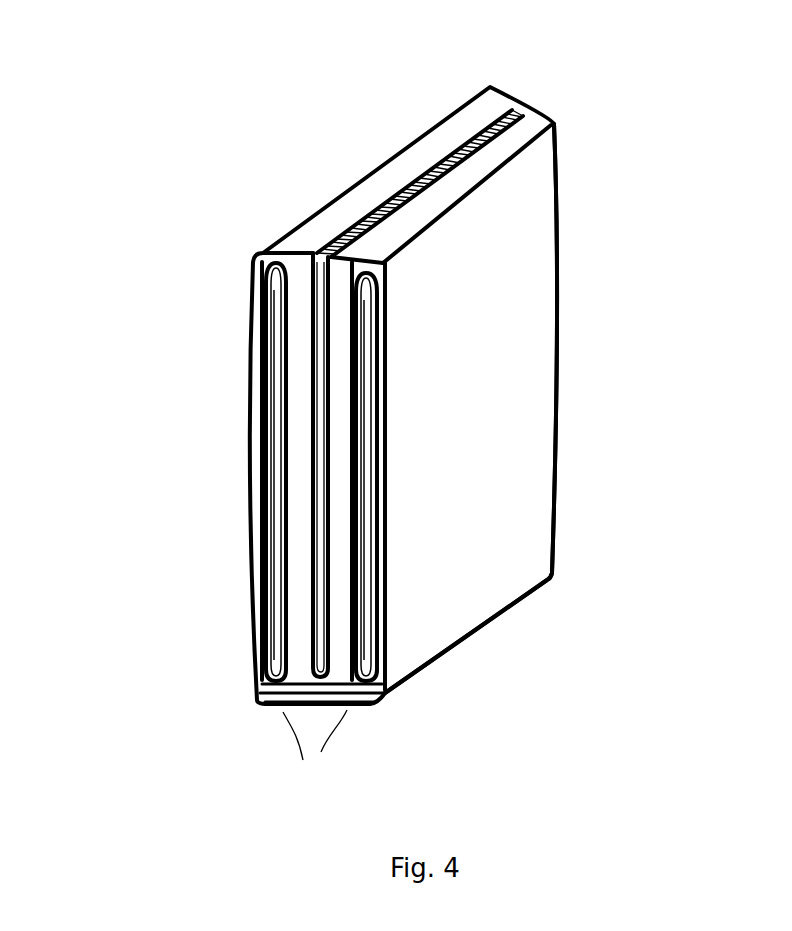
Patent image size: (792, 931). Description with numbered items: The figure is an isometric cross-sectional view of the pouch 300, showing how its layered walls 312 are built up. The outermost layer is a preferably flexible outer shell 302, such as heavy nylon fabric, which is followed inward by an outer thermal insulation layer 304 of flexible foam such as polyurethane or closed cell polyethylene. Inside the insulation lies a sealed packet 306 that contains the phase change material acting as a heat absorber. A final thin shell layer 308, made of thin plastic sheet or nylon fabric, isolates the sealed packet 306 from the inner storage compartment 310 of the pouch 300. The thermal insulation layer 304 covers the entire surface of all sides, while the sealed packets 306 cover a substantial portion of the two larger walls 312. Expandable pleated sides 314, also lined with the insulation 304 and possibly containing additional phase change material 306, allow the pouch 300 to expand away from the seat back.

The pouch 300 is at (605, 122).
The outer shell 302 is at (546, 278).
The outer thermal insulation layer 304 is at (257, 677).
The sealed packet 306 is at (387, 653).
The thin shell layer 308 is at (257, 263).
The inner storage compartment 310 is at (298, 473).
The walls 312 is at (344, 328).
The expandable sides 314 is at (315, 752).